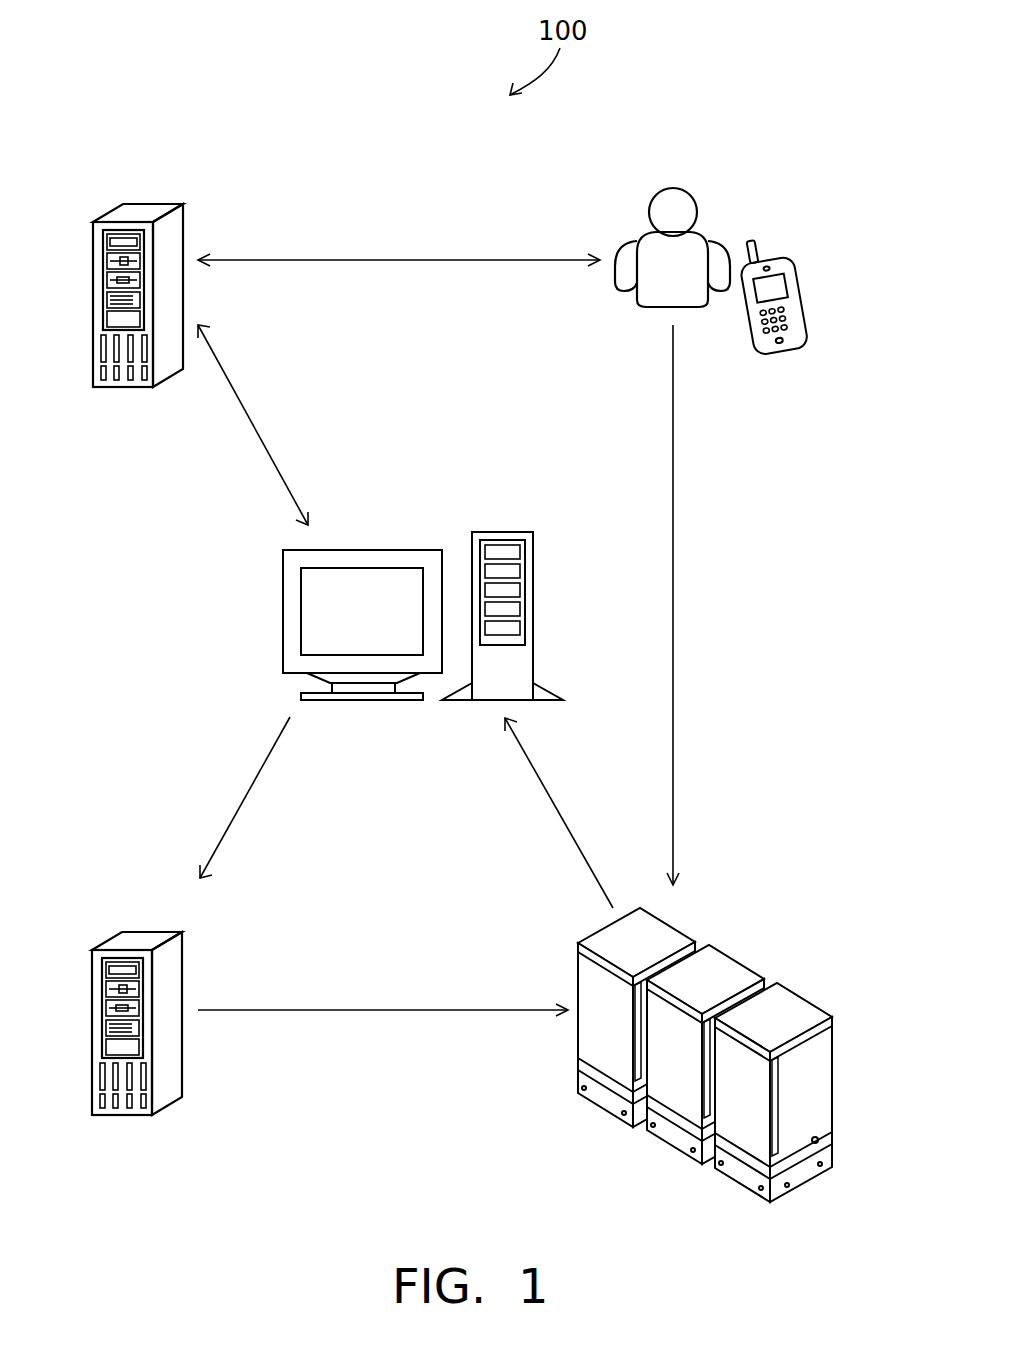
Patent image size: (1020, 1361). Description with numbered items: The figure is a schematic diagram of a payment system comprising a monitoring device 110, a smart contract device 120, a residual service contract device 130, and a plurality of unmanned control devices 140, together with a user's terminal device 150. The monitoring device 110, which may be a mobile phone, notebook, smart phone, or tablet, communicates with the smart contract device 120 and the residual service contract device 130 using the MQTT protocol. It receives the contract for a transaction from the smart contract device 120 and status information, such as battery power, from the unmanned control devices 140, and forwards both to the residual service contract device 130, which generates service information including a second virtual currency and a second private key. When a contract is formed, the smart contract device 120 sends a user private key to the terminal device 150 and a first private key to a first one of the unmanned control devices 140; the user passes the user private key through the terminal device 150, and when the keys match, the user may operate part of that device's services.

The monitoring device 110 is at (366, 549).
The smart contract device 120 is at (140, 205).
The residual service contract device 130 is at (140, 933).
The unmanned control devices 140 is at (828, 1010).
The terminal device 150 is at (783, 262).